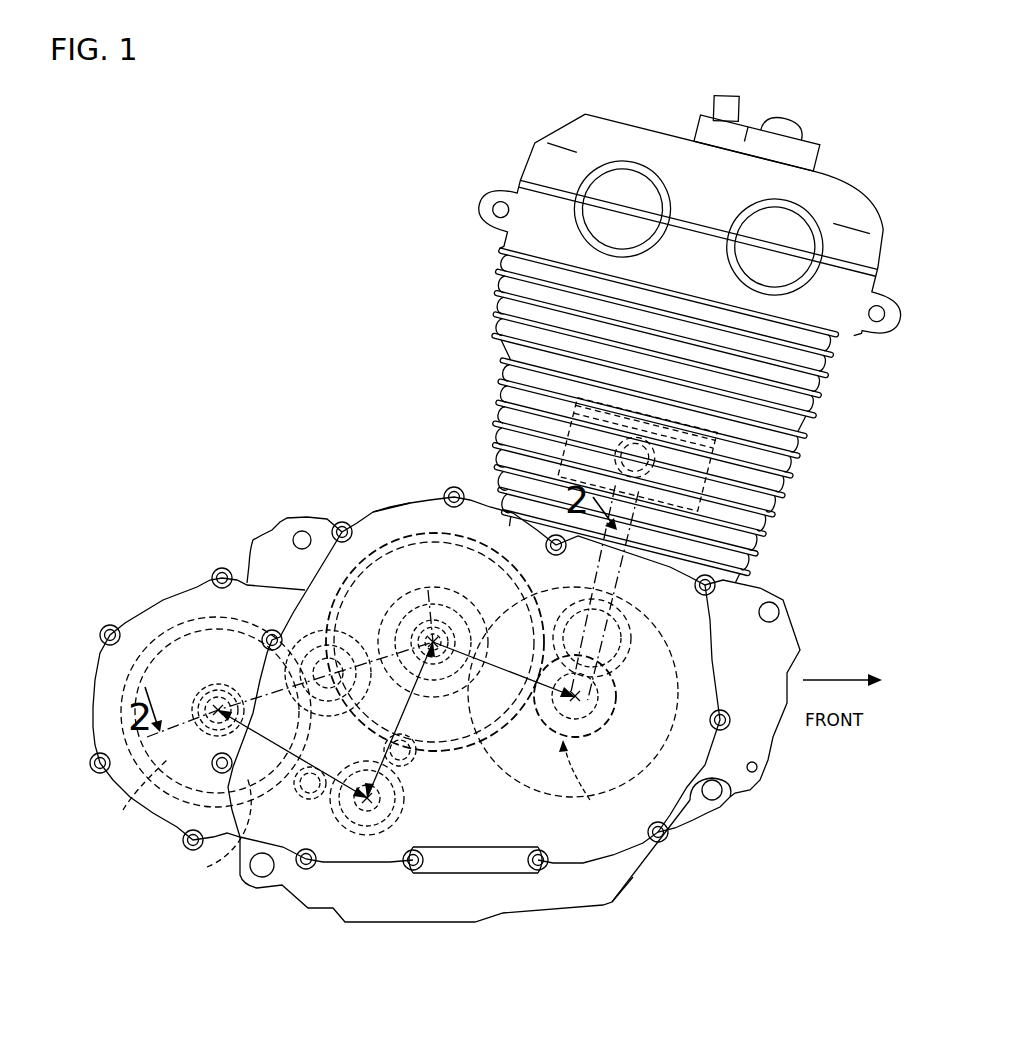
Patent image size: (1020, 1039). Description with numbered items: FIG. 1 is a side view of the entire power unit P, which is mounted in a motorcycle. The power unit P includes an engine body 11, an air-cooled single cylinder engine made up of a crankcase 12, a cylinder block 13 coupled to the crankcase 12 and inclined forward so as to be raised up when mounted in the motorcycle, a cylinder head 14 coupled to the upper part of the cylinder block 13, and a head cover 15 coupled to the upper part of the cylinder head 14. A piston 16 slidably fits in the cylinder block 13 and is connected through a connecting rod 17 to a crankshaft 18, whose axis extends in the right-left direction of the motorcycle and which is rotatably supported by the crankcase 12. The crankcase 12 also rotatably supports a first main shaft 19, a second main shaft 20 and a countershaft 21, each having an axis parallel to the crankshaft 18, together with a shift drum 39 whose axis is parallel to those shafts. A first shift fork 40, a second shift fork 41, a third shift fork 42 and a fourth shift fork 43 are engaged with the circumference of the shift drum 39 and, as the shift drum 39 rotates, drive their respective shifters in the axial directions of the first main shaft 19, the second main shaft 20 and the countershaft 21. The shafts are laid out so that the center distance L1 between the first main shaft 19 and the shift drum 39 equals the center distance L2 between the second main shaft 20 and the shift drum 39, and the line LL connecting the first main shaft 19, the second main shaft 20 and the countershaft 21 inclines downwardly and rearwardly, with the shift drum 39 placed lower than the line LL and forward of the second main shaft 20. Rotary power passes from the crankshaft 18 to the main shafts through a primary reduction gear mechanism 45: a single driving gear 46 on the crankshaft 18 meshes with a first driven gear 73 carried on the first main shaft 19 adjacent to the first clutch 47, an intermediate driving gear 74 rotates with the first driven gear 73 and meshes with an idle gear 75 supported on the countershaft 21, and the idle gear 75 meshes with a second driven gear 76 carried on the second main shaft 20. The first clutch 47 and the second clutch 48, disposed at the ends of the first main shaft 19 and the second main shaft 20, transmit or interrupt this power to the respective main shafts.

The engine body 11 is at (386, 503).
The crankcase 12 is at (348, 905).
The cylinder block 13 is at (507, 417).
The cylinder head 14 is at (510, 328).
The head cover 15 is at (533, 167).
The piston 16 is at (712, 468).
The connecting rod 17 is at (653, 623).
The crankshaft 18 is at (617, 693).
The first main shaft 19 is at (455, 626).
The second main shaft 20 is at (203, 693).
The countershaft 21 is at (345, 630).
The shift drum 39 is at (400, 812).
The first shift fork 40 is at (490, 733).
The second shift fork 41 is at (262, 832).
The third shift fork 42 is at (237, 683).
The fourth shift fork 43 is at (391, 618).
The primary reduction gear mechanism 45 is at (585, 786).
The driving gear 46 is at (590, 740).
The first clutch 47 is at (419, 535).
The second clutch 48 is at (166, 622).
The first driven gear 73 is at (366, 504).
The intermediate driving gear 74 is at (453, 607).
The idle gear 75 is at (263, 543).
The second driven gear 76 is at (138, 797).
The center distance L1 is at (423, 732).
The center distance L2 is at (223, 783).
The line LL is at (437, 604).
The power unit P is at (638, 882).